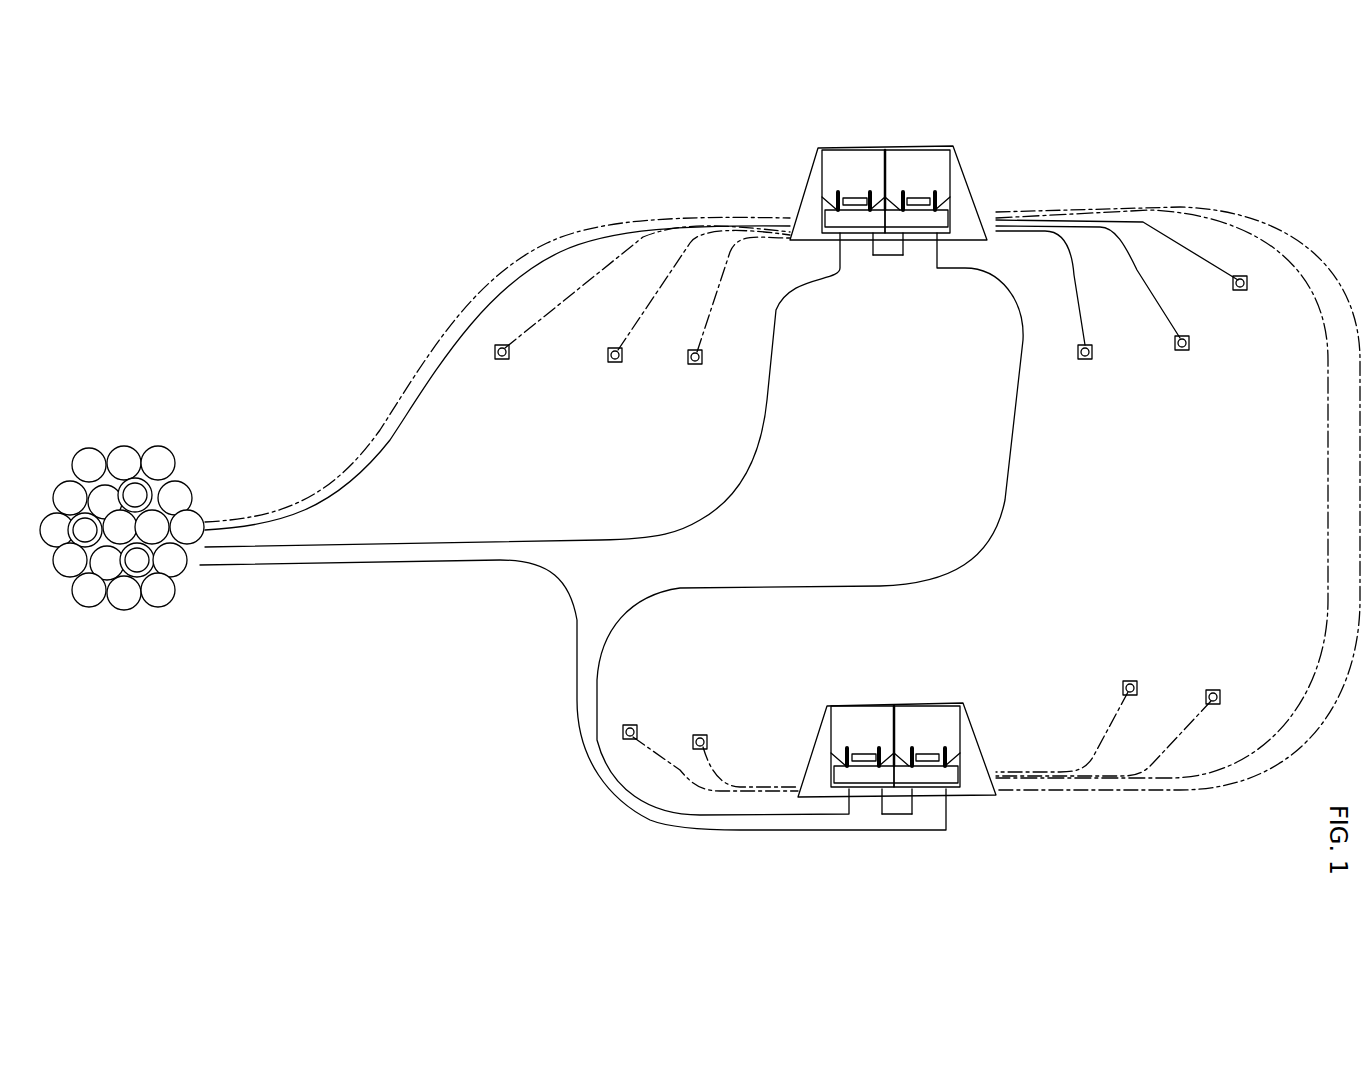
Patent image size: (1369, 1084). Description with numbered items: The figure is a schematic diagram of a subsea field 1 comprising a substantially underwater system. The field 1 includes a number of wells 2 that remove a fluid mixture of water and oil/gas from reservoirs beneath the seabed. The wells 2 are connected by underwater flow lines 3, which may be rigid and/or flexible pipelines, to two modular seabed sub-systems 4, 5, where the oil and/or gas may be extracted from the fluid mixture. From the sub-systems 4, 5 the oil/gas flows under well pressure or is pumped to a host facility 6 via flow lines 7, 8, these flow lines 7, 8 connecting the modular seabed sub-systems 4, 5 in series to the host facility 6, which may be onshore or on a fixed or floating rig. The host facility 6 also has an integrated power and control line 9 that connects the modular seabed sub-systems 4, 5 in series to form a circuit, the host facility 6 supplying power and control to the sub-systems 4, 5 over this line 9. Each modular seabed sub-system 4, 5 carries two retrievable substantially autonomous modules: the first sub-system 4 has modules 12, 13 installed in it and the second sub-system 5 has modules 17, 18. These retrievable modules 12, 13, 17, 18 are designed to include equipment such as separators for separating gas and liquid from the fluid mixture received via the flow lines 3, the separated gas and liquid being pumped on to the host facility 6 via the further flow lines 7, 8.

The subsea field 1 is at (268, 253).
The wells 2 is at (498, 360).
The underwater flow lines 3 is at (562, 303).
The first modular seabed sub-system 4 is at (911, 160).
The second modular seabed sub-system 5 is at (921, 745).
The host facility 6 is at (137, 607).
The flow line 7 is at (400, 387).
The flow line 8 is at (372, 455).
The integrated power and control line 9 is at (423, 565).
The retrievable substantially autonomous module 12 is at (830, 148).
The retrievable substantially autonomous module 13 is at (935, 147).
The retrievable substantially autonomous subsea module 17 is at (837, 697).
The retrievable substantially autonomous subsea module 18 is at (940, 700).